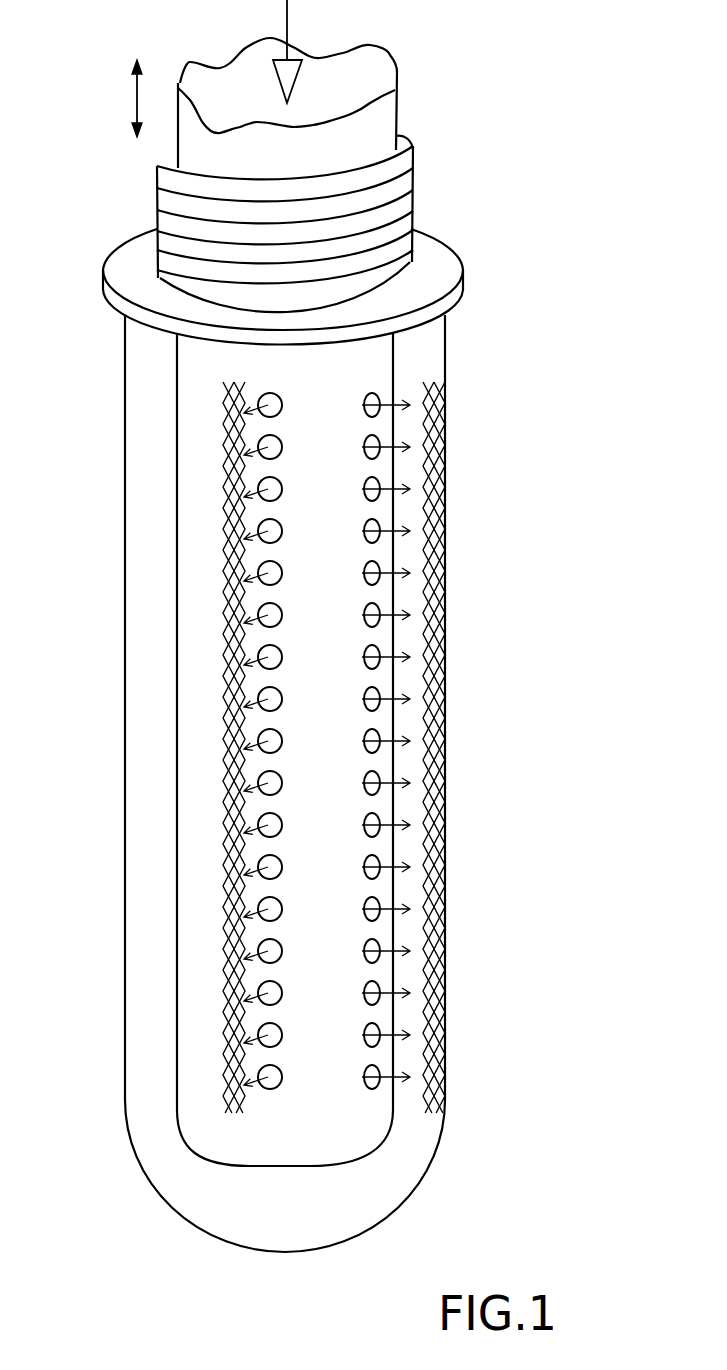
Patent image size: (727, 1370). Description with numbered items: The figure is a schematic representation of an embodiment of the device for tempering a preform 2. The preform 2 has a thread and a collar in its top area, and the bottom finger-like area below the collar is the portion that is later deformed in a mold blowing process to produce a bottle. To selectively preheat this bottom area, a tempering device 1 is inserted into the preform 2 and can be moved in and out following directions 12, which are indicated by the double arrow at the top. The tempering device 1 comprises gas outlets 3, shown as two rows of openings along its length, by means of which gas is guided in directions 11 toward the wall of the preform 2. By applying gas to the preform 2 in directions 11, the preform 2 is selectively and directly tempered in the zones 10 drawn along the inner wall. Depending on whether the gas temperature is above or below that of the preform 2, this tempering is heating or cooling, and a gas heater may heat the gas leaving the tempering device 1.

The tempering device 1 is at (375, 128).
The preform 2 is at (443, 268).
The gas outlets 3 is at (283, 478).
The zones 10 is at (443, 607).
The directions 11 is at (372, 522).
The directions 12 is at (135, 97).